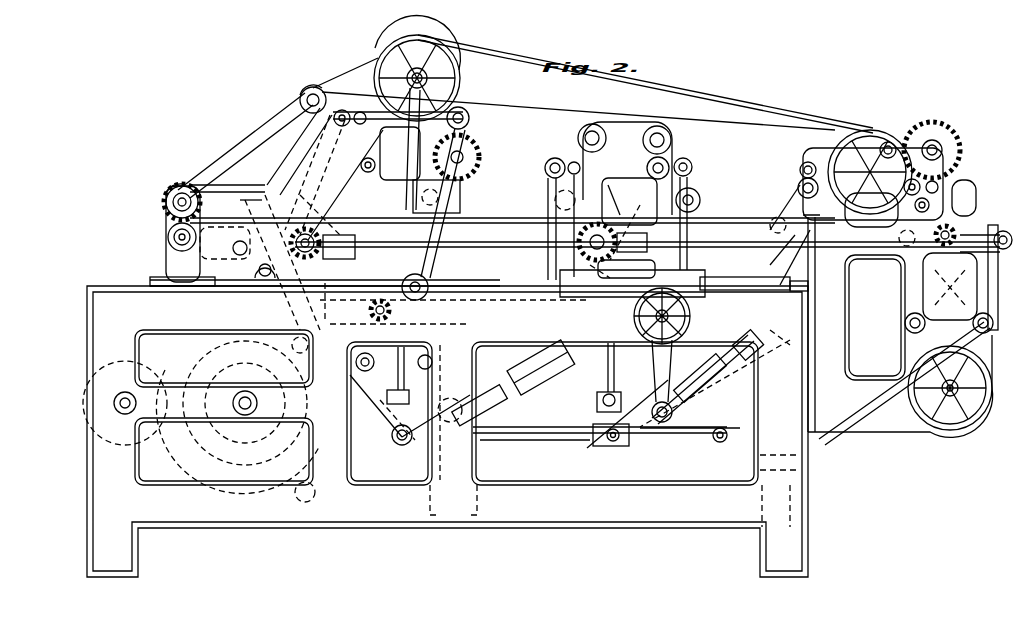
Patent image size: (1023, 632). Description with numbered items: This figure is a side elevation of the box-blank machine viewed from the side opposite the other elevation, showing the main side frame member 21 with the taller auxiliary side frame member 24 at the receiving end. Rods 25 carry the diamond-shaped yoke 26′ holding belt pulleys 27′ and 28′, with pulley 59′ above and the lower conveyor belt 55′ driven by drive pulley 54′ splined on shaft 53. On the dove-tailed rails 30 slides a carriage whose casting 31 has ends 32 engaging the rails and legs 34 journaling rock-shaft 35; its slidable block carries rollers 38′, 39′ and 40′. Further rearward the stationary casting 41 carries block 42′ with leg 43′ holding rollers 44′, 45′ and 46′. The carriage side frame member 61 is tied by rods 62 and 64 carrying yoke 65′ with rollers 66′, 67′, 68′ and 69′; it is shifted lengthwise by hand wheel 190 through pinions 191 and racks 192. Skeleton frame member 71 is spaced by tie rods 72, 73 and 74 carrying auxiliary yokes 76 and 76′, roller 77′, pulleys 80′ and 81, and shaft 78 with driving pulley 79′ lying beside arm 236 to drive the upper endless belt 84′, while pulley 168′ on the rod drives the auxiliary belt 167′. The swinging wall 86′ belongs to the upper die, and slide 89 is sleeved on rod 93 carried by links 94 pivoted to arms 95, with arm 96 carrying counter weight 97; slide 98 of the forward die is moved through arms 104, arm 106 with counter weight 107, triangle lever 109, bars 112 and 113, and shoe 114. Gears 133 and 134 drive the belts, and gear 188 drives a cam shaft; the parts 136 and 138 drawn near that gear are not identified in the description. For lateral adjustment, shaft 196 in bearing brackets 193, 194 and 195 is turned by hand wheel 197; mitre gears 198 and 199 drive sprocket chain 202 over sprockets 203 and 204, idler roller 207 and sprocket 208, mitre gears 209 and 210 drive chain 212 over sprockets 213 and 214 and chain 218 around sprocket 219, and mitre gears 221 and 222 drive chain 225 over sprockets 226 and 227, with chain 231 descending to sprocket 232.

The main side frame member 21 is at (445, 431).
The auxiliary side frame member 24 is at (898, 326).
The parallel rods 25 is at (905, 330).
The diamond-shaped yoke 26′ is at (988, 378).
The belt pulley 27′ is at (980, 290).
The belt pulley 28′ is at (905, 405).
The dove-tailed rails 30 is at (785, 286).
The casting 31 is at (575, 248).
The casting ends 32 is at (700, 280).
The legs 34 is at (612, 390).
The rock-shaft 35 is at (665, 425).
The roller 38′ is at (660, 235).
The roller 39′ is at (512, 228).
The roller 40′ is at (590, 305).
The stationary casting 41 is at (335, 303).
The block 42′ is at (395, 320).
The leg 43′ is at (476, 347).
The roller 44′ is at (395, 440).
The belt roller 45′ is at (462, 200).
The belt roller 46′ is at (440, 296).
The shaft 53 is at (168, 250).
The drive pulley 54′ is at (160, 277).
The lower conveyor belt 55′ is at (875, 455).
The pulley 59′ is at (845, 140).
The side frame member 61 is at (690, 225).
The rod 62 is at (668, 160).
The rod 64 is at (545, 168).
The yoke 65′ is at (612, 128).
The roller 66′ is at (700, 195).
The roller 67′ is at (555, 202).
The roller 68′ is at (660, 128).
The roller 69′ is at (580, 132).
The skeleton frame member 71 is at (285, 158).
The tie rod 72 is at (470, 120).
The tie rod 73 is at (440, 62).
The tie rod 74 is at (318, 88).
The auxiliary yoke 76 is at (430, 78).
The auxiliary yoke 76′ is at (305, 128).
The roller 77′ is at (300, 97).
The shaft 78 is at (164, 203).
The driving pulley 79′ is at (166, 192).
The pulley 80′ is at (268, 185).
The pulley 81 is at (385, 165).
The upper endless belt 84′ is at (750, 118).
The swinging wall 86′ is at (629, 195).
The slide 89 is at (605, 347).
The horizontal rod 93 is at (596, 401).
The link 94 is at (605, 418).
The arm 95 is at (658, 425).
The arm 96 is at (712, 378).
The counter weight 97 is at (748, 352).
The vertical slide 98 is at (395, 385).
The arm 104 is at (420, 448).
The arm 106 is at (500, 395).
The counter weight 107 is at (545, 350).
The triangle lever 109 is at (725, 398).
The bar 112 is at (550, 440).
The bar 113 is at (580, 368).
The shoe 114 is at (605, 447).
The gear 133 is at (166, 234).
The gear 134 is at (192, 180).
The roller 136 is at (960, 215).
The hook 138 is at (970, 192).
The auxiliary belt 167′ is at (372, 58).
The pulley 168′ is at (425, 37).
The gear 188 is at (935, 125).
The hand wheel 190 is at (692, 322).
The pinion 191 is at (678, 335).
The rack 192 is at (790, 340).
The bearing bracket 193 is at (995, 252).
The bearing bracket 194 is at (680, 262).
The bearing bracket 195 is at (340, 235).
The horizontal shaft 196 is at (780, 250).
The hand wheel 197 is at (800, 255).
The mitre gear 198 is at (985, 230).
The mitre gear 199 is at (940, 230).
The sprocket chain 202 is at (875, 317).
The sprocket 203 is at (950, 172).
The sprocket 204 is at (800, 168).
The idler roller 207 is at (900, 236).
The sprocket 208 is at (960, 318).
The intermediate mitre gear 209 is at (612, 235).
The mitre gear 210 is at (585, 252).
The sprocket chain 212 is at (627, 200).
The sprocket 213 is at (690, 165).
The sprocket 214 is at (578, 152).
The sprocket chain 218 is at (626, 269).
The sprocket 219 is at (635, 270).
The mitre gear 221 is at (275, 270).
The mitre gear 222 is at (290, 240).
The sprocket chain 225 is at (296, 205).
The sprocket 226 is at (385, 112).
The sprocket 227 is at (470, 95).
The chain 231 is at (462, 170).
The sprocket 232 is at (400, 312).
The arm 236 is at (210, 185).